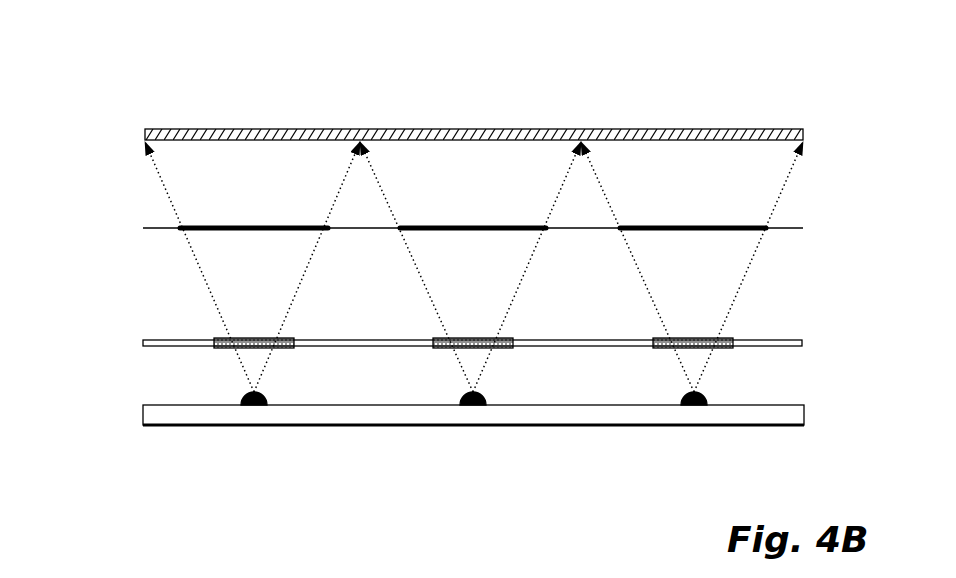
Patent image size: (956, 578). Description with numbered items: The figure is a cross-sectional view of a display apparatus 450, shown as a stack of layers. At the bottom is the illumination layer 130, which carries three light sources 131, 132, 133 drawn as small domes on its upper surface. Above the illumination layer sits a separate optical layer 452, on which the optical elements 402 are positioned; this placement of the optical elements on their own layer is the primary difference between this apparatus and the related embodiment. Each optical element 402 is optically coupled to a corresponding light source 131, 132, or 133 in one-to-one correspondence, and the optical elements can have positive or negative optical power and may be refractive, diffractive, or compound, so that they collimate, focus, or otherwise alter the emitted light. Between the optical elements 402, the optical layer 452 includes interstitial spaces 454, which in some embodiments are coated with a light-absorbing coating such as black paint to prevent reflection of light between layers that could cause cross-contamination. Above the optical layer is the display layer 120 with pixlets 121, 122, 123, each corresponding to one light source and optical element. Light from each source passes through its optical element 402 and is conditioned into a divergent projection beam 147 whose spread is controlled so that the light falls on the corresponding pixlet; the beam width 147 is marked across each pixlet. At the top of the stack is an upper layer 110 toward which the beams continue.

The display apparatus 450 is at (760, 73).
The reflector / top layer 110 is at (122, 135).
The display layer 120 is at (122, 228).
The pixlet 121 is at (260, 225).
The pixlet 122 is at (477, 225).
The pixlet 123 is at (692, 225).
The divergent projection beam 147 is at (201, 245).
The optical layer 452 is at (122, 343).
The optical element 402 is at (216, 338).
The interstitial space 454 is at (176, 348).
The illumination layer 130 is at (122, 410).
The light source 131 is at (254, 405).
The light source 132 is at (473, 405).
The light source 133 is at (694, 405).